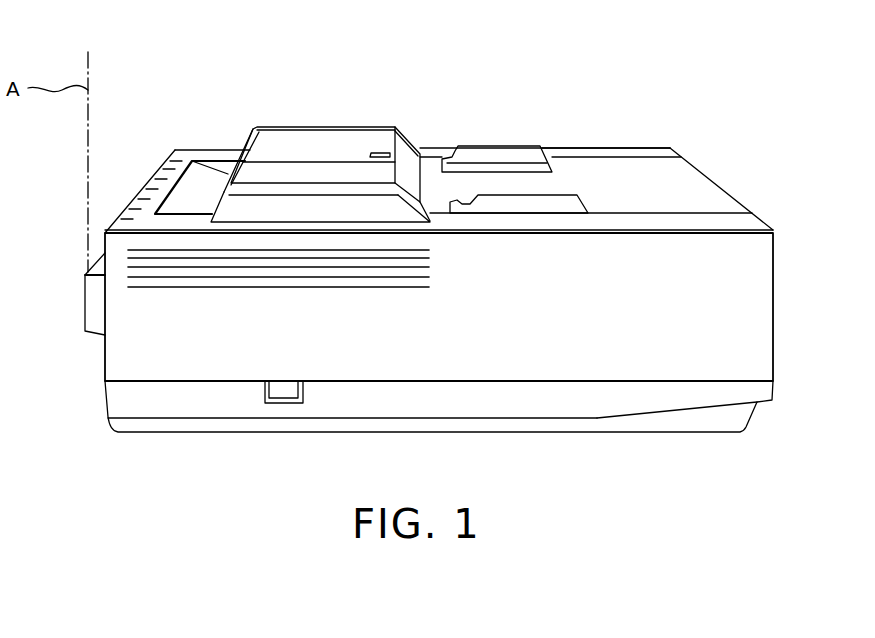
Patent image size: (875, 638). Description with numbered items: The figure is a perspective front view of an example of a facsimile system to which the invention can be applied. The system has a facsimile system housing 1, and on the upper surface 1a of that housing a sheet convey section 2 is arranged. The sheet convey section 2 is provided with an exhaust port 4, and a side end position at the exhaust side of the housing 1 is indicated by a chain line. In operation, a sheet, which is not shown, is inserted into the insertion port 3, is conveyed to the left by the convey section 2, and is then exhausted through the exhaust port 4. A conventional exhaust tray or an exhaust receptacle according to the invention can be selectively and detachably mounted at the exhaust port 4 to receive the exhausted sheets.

The facsimile system housing 1 is at (763, 310).
The upper surface 1a is at (695, 188).
The sheet convey section 2 is at (327, 145).
The insertion port 3 is at (427, 170).
The exhaust port 4 is at (190, 183).